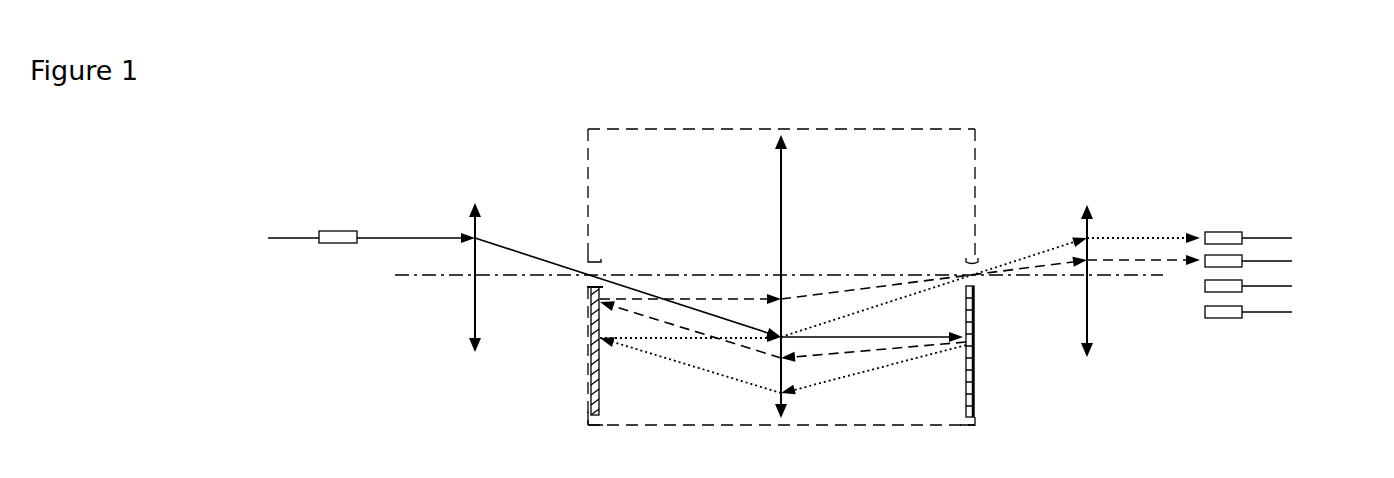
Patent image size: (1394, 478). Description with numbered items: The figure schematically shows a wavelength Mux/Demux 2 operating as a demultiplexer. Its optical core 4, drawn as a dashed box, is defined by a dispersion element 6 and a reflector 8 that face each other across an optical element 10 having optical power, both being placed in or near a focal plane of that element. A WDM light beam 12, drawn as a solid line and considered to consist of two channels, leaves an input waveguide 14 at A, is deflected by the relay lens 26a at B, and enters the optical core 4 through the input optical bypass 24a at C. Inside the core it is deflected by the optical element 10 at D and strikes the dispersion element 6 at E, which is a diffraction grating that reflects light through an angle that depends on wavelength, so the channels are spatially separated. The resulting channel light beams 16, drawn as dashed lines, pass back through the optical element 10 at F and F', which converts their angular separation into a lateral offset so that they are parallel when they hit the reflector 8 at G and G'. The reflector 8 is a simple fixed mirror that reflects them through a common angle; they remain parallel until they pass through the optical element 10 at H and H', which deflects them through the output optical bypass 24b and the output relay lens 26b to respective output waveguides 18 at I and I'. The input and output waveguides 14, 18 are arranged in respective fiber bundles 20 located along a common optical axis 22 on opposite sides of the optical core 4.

The wavelength Mux/Demux 2 is at (1017, 108).
The optical core 4 is at (633, 128).
The dispersion element 6 is at (978, 384).
The reflector 8 is at (591, 400).
The optical element 10 is at (779, 187).
The WDM light beam 12 is at (427, 237).
The input waveguide 14 is at (287, 236).
The channel light beams 16 is at (838, 353).
The output waveguides 18 is at (1292, 238).
The fiber bundles 20 is at (247, 233).
The optical axis 22 is at (410, 276).
The input optical bypass 24a is at (583, 262).
The output optical bypass 24b is at (975, 280).
The input relay lens 26a is at (470, 305).
The output relay lens 26b is at (1092, 305).